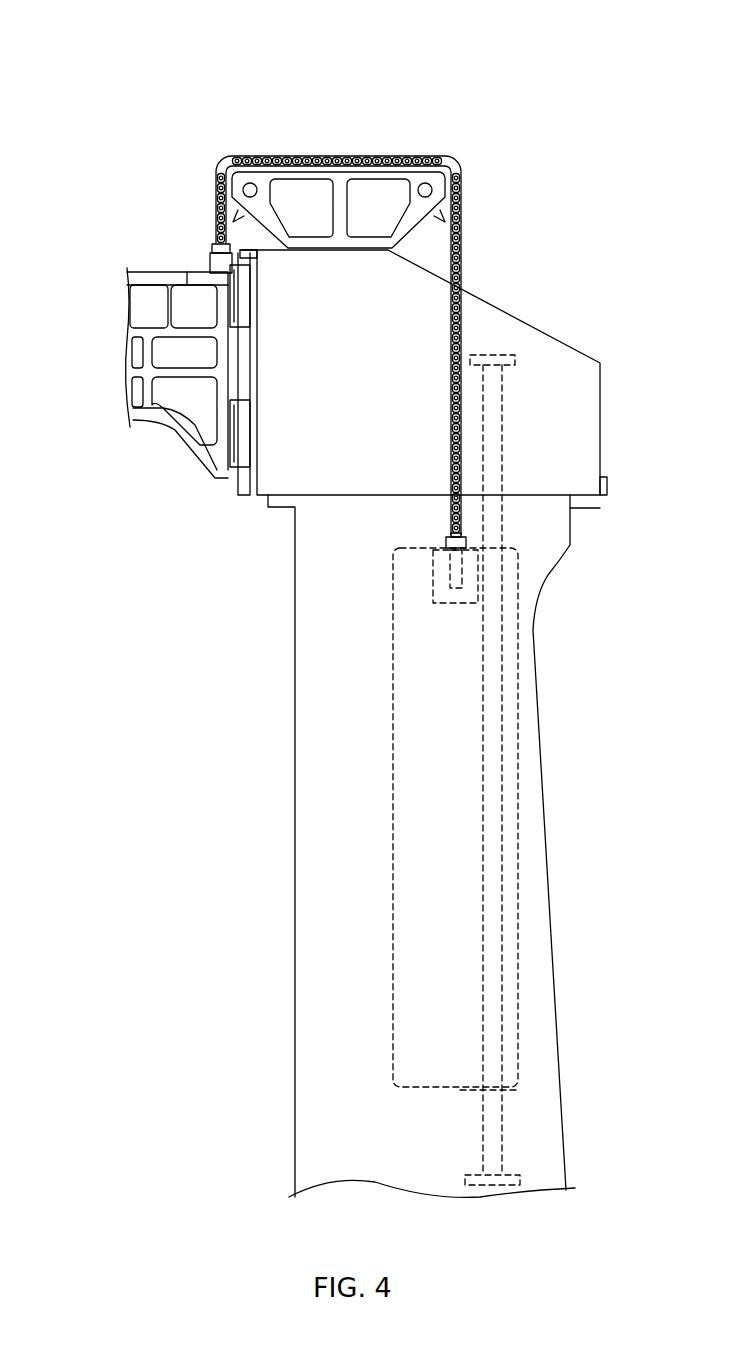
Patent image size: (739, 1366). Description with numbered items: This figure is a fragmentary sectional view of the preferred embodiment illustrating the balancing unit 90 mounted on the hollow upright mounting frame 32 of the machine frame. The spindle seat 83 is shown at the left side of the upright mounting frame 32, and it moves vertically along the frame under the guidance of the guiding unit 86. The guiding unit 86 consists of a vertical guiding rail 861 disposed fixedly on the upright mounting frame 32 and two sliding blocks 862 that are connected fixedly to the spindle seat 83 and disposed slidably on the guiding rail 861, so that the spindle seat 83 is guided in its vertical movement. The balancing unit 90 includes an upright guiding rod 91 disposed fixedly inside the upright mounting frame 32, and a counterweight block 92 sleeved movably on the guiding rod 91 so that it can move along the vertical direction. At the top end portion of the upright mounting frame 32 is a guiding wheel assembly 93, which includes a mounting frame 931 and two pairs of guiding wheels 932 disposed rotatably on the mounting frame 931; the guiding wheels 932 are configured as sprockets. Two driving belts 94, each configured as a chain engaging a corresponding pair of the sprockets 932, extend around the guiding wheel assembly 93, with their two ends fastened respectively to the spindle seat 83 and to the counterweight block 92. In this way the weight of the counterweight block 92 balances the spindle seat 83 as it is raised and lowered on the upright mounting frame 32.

The balancing unit 90 is at (380, 140).
The guiding wheel assembly 93 is at (347, 147).
The mounting frame 931 is at (395, 175).
The guiding wheels 932 is at (215, 182).
The driving belts 94 is at (462, 233).
The spindle seat 83 is at (148, 278).
The guiding unit 86 is at (193, 407).
The vertical guiding rail 861 is at (246, 495).
The sliding blocks 862 is at (240, 292).
The upright mounting frame 32 is at (540, 580).
The upright guiding rod 91 is at (497, 880).
The counterweight block 92 is at (513, 953).